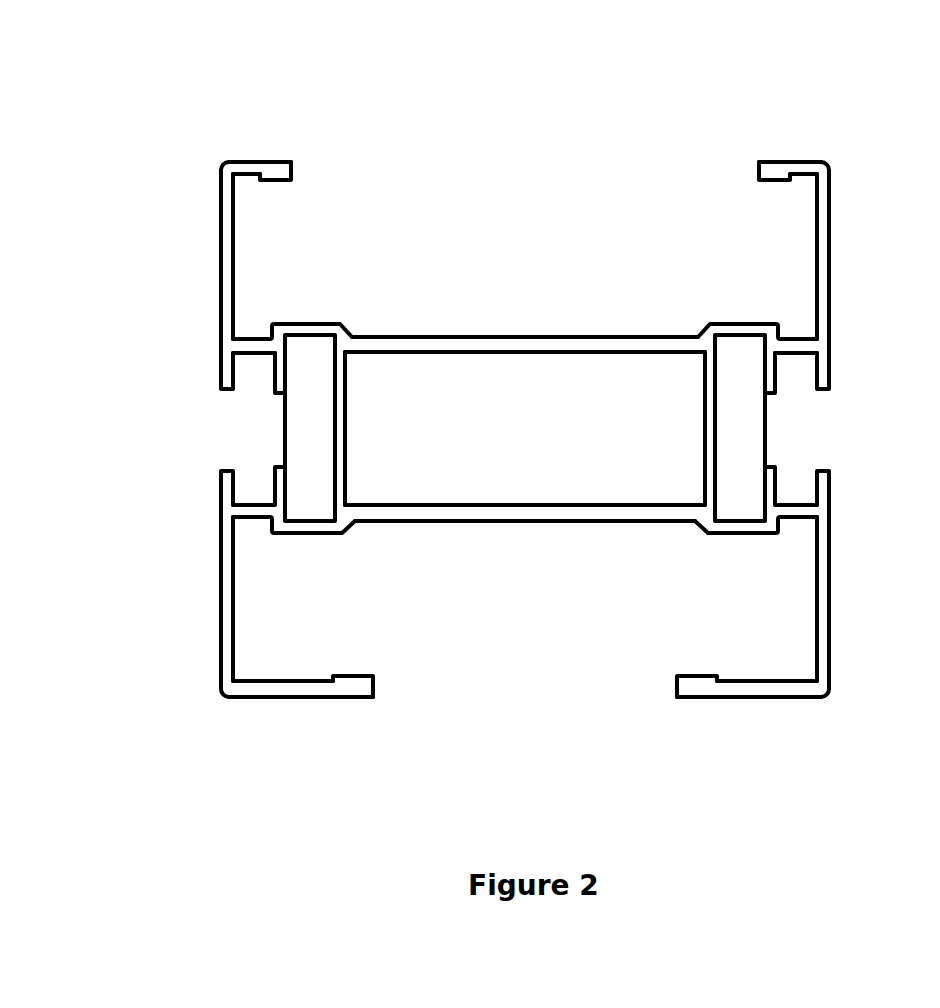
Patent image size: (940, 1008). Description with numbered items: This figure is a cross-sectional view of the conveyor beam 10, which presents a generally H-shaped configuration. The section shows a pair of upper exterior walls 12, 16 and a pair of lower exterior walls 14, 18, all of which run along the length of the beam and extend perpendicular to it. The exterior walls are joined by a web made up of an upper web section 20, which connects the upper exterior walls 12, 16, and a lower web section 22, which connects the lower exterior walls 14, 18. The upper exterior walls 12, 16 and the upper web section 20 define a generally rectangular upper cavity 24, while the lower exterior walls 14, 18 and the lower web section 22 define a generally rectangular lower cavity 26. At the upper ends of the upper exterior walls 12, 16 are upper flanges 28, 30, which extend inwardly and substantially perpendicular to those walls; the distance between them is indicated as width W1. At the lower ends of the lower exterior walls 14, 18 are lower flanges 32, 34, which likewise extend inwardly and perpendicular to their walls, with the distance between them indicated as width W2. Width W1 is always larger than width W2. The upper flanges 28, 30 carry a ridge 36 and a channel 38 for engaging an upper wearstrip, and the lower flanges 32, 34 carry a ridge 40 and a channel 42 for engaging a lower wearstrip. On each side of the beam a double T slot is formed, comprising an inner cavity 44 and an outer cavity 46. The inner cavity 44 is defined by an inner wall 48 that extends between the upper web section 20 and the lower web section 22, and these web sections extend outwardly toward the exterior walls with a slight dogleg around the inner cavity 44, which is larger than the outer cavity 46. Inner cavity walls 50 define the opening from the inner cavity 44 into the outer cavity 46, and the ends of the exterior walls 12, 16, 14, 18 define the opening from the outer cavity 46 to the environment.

The conveyor beam 10 is at (110, 116).
The upper exterior wall 12 is at (831, 233).
The lower exterior wall 14 is at (831, 619).
The upper exterior wall 16 is at (221, 263).
The lower exterior wall 18 is at (221, 626).
The upper web section 20 is at (535, 345).
The lower web section 22 is at (528, 513).
The upper cavity 24 is at (525, 256).
The lower cavity 26 is at (525, 601).
The upper flange 28 is at (788, 162).
The upper flange 30 is at (264, 162).
The lower flange 32 is at (760, 699).
The lower flange 34 is at (312, 699).
The ridge 36 is at (281, 184).
The channel 38 is at (245, 179).
The ridge 40 is at (350, 673).
The channel 42 is at (282, 678).
The inner cavity 44 is at (525, 428).
The outer cavity 46 is at (215, 403).
The inner wall 48 is at (343, 416).
The inner cavity wall 50 is at (272, 392).
The width W1 is at (756, 168).
The width W2 is at (674, 687).